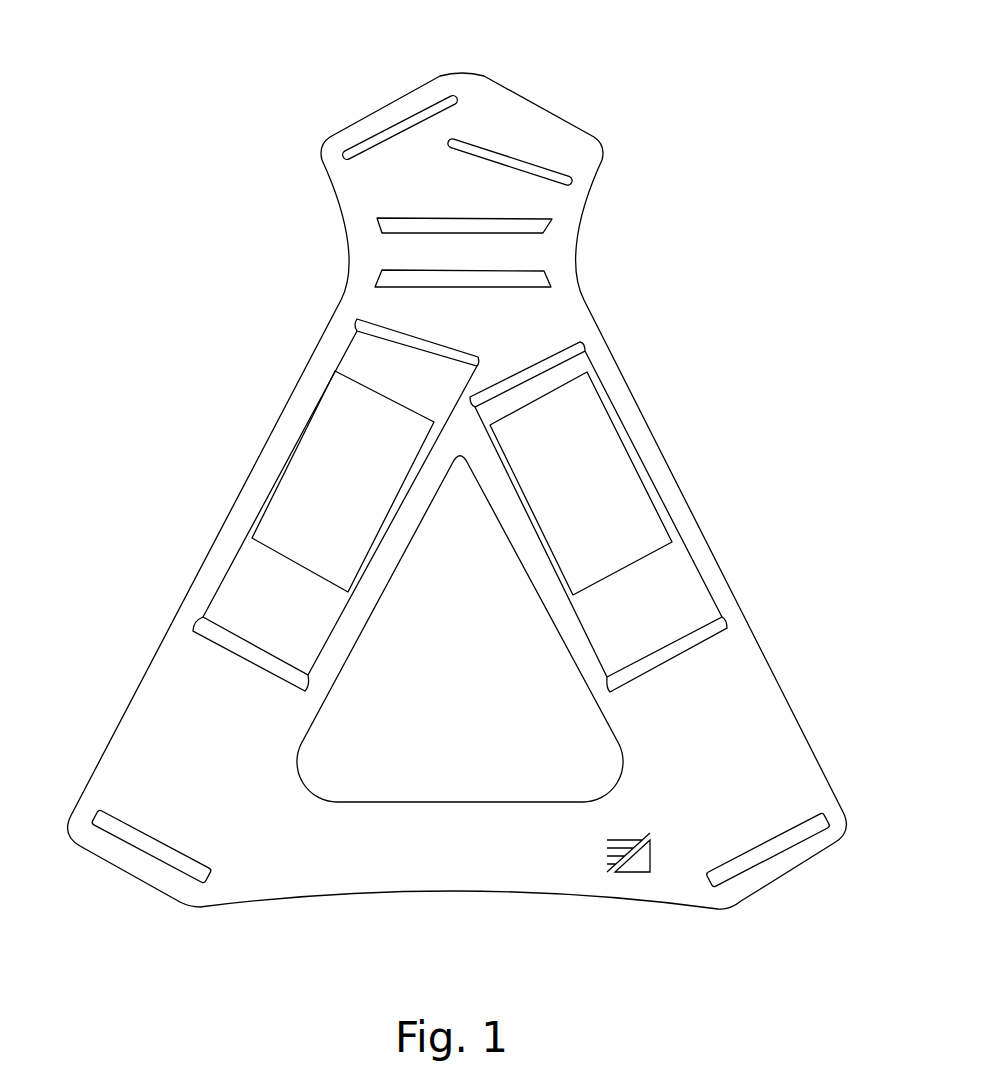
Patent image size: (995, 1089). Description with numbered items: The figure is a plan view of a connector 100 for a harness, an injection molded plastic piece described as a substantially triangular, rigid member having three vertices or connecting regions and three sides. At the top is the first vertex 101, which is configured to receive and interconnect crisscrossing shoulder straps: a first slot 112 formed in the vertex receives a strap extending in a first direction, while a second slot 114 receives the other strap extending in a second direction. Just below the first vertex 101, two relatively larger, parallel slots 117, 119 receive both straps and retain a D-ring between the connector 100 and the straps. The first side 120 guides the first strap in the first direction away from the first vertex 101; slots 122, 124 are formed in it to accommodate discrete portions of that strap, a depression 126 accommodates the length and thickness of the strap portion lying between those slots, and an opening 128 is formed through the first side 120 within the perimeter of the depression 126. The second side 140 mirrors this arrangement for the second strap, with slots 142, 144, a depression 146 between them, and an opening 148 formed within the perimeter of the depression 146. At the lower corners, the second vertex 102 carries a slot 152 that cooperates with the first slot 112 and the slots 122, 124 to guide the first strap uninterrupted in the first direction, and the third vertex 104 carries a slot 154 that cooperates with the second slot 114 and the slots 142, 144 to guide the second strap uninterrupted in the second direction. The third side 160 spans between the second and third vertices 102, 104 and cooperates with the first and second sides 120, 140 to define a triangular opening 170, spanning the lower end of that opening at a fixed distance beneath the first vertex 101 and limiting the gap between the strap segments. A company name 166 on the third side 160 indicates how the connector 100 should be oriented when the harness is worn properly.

The connector 100 is at (148, 78).
The first vertex 101 is at (523, 113).
The second vertex 102 is at (123, 780).
The third vertex 104 is at (807, 787).
The first slot 112 is at (570, 180).
The second slot 114 is at (402, 127).
The parallel slot 117 is at (397, 225).
The parallel slot 119 is at (547, 283).
The first side 120 is at (262, 462).
The slot 122 is at (357, 320).
The slot 124 is at (203, 628).
The depression 126 is at (235, 580).
The opening 128 is at (325, 413).
The second side 140 is at (703, 552).
The slot 142 is at (578, 345).
The slot 144 is at (703, 635).
The depression 146 is at (687, 603).
The opening 148 is at (603, 445).
The slot 152 is at (163, 853).
The slot 154 is at (770, 847).
The third side 160 is at (463, 883).
The company name 166 is at (353, 867).
The triangular opening 170 is at (480, 715).